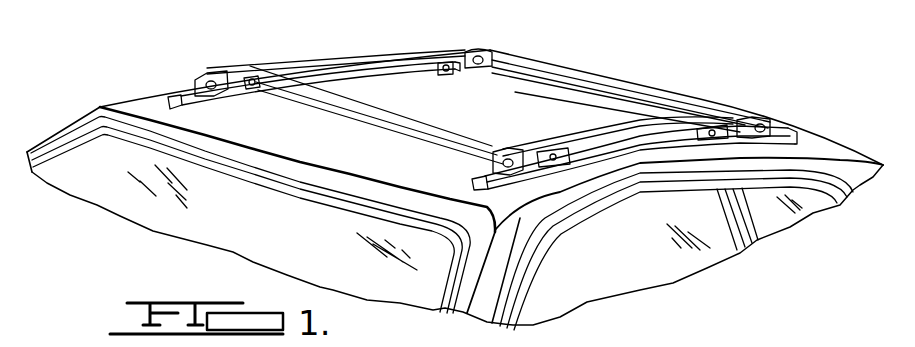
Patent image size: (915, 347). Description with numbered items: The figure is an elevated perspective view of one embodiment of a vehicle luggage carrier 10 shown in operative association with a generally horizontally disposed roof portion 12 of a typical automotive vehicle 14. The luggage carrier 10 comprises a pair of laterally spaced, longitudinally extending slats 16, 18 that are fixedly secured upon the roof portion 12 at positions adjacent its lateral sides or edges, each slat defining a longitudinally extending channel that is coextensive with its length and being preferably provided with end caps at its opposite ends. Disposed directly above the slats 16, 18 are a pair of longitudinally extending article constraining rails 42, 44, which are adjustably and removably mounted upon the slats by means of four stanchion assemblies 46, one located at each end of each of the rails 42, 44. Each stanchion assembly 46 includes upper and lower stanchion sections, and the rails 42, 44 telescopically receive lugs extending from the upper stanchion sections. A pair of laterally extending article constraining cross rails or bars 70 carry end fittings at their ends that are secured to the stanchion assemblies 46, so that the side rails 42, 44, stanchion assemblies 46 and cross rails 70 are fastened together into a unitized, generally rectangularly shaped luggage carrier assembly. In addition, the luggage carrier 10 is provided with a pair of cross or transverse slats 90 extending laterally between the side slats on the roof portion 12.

The vehicle luggage carrier 10 is at (471, 131).
The roof portion 12 is at (808, 147).
The automotive vehicle 14 is at (518, 301).
The slat 16 is at (618, 170).
The slat 18 is at (242, 108).
The article constraining rail 42 is at (572, 131).
The article constraining rail 44 is at (328, 45).
The stanchion assembly 46 is at (195, 75).
The cross rail 70 is at (547, 72).
The cross slat 90 is at (383, 128).